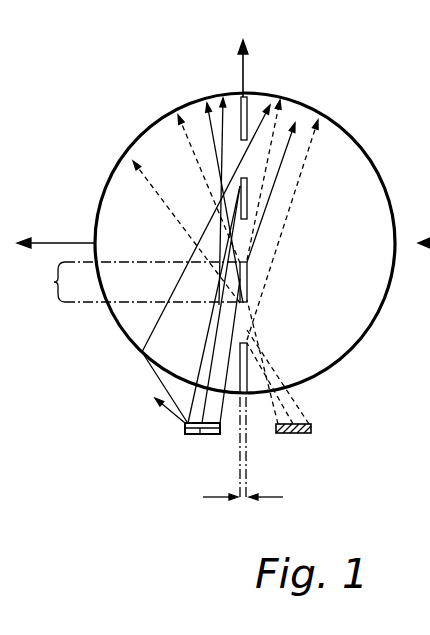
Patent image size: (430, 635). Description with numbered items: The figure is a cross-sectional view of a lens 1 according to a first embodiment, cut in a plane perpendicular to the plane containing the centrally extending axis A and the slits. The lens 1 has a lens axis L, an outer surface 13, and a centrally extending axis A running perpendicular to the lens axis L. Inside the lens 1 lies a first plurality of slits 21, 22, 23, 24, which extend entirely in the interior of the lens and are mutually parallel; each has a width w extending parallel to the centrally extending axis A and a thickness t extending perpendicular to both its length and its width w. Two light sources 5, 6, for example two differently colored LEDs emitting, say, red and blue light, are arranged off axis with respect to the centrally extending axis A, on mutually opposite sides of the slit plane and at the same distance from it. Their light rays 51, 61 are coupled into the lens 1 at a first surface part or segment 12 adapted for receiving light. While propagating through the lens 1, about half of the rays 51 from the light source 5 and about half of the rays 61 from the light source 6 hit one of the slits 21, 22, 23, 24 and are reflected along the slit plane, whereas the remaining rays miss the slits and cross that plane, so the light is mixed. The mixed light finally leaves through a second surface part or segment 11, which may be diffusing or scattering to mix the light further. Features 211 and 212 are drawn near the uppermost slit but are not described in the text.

The lens 1 is at (110, 75).
The second surface part or segment 11 is at (168, 112).
The first surface part or segment 12 is at (167, 388).
The outer surface 13 is at (93, 234).
The lens axis L is at (42, 242).
The centrally extending axis A is at (245, 92).
The first slit element 211 is at (247, 97).
The slit 21 is at (249, 116).
The slit 212 is at (243, 139).
The slit 22 is at (247, 183).
The slit 23 is at (247, 279).
The slit 24 is at (247, 357).
The width w is at (136, 282).
The light source 5 is at (200, 436).
The light ray 51 is at (155, 323).
The light source 6 is at (294, 434).
The light ray 61 is at (292, 319).
The thickness t is at (243, 448).